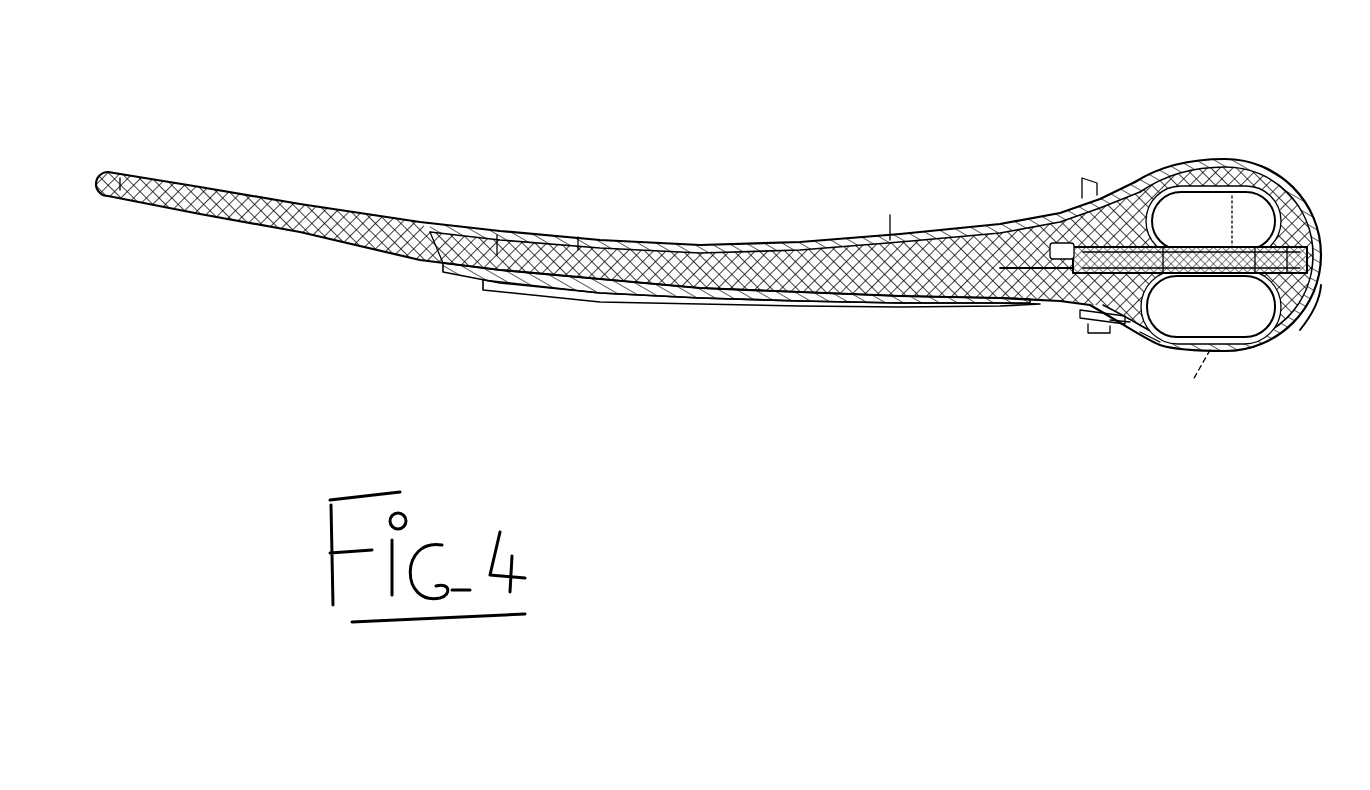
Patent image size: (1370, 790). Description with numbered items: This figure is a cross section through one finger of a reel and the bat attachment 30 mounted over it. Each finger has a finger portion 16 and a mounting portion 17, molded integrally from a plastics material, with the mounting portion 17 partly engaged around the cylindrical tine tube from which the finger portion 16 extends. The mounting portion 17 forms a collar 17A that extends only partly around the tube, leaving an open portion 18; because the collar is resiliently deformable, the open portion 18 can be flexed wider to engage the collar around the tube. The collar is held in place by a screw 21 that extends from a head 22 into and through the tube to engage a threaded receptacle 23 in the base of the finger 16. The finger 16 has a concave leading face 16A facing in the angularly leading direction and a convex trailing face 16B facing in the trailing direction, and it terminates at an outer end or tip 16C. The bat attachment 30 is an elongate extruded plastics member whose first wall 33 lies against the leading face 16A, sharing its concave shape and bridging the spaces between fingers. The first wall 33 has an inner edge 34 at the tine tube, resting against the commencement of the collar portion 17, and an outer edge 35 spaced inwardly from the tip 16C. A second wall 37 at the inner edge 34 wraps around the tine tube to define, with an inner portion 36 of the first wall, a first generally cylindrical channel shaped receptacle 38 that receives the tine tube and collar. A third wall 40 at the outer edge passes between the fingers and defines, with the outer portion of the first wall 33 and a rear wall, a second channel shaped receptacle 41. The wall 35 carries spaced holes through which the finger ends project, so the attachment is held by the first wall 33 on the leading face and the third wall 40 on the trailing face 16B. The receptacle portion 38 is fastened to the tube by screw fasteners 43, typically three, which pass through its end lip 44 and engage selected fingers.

The finger portion 16 is at (818, 305).
The leading face 16A is at (684, 237).
The trailing face 16B is at (450, 272).
The outer end or tip 16C is at (233, 230).
The mounting portion 17 is at (1200, 158).
The collar 17A is at (1278, 355).
The open portion 18 is at (1163, 335).
The screw 21 is at (1310, 167).
The head 22 is at (1313, 302).
The threaded receptacle 23 is at (1050, 302).
The bat attachment 30 is at (900, 212).
The first wall 33 is at (578, 237).
The inner edge 34 is at (1130, 167).
The outer edge 35 is at (497, 235).
The inner portion 36 is at (1172, 168).
The second wall 37 is at (1227, 158).
The first channel shaped receptacle 38 is at (1243, 352).
The third wall 40 is at (473, 275).
The second channel shaped receptacle 41 is at (592, 320).
The screw fasteners 43 is at (1107, 333).
The end lip 44 is at (1120, 323).